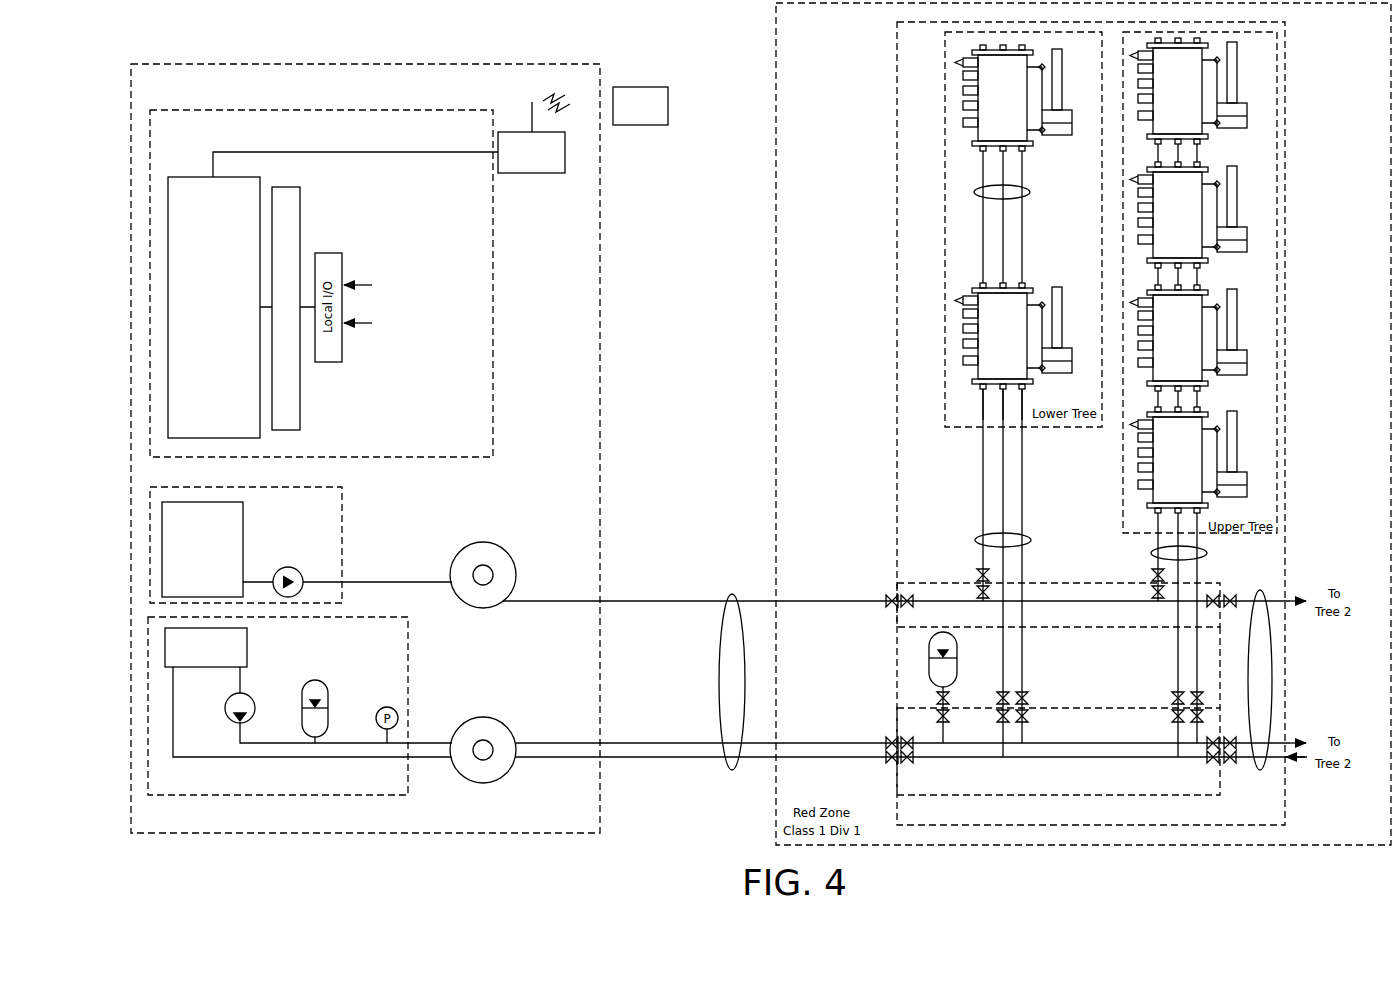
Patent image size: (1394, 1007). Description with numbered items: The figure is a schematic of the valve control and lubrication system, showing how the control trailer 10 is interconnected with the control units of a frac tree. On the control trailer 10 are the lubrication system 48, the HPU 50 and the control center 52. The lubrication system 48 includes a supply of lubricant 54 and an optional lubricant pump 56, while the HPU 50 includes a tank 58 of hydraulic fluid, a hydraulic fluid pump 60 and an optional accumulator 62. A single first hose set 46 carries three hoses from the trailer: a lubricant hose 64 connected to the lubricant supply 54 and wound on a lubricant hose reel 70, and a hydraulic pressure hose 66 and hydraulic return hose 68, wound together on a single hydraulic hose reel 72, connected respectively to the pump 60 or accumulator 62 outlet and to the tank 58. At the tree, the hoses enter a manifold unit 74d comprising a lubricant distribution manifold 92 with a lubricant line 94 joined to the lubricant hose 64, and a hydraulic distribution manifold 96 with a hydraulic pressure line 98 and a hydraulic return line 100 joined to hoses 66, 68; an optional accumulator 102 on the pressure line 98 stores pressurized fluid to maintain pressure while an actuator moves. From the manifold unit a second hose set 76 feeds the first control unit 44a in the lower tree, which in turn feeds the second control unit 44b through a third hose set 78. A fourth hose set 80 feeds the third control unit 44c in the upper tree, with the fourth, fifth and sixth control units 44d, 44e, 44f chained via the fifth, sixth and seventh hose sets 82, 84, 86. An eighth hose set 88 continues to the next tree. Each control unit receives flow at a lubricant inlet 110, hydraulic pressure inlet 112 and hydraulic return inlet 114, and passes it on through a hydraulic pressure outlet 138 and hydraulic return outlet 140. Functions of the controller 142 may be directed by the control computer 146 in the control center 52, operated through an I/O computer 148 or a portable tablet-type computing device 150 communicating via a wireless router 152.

The control trailer 10 is at (604, 288).
The first control unit 44a is at (1000, 337).
The second control unit 44b is at (995, 98).
The third control unit 44c is at (1188, 462).
The fourth control unit 44d is at (1188, 333).
The fifth control unit 44e is at (1192, 218).
The sixth control unit 44f is at (1190, 98).
The first hose set 46 is at (730, 590).
The lubrication system 48 is at (347, 522).
The HPU 50 is at (411, 675).
The control center 52 is at (496, 337).
The supply of lubricant 54 is at (243, 536).
The lubricant pump 56 is at (300, 571).
The tank 58 is at (247, 647).
The hydraulic fluid pump 60 is at (226, 714).
The accumulator 62 is at (318, 680).
The lubricant hose 64 is at (612, 600).
The hydraulic pressure hose 66 is at (612, 742).
The hydraulic return hose 68 is at (612, 758).
The lubricant hose reel 70 is at (495, 607).
The hydraulic hose reel 72 is at (510, 777).
The manifold unit 74d is at (893, 674).
The second hose set 76 is at (972, 539).
The third hose set 78 is at (972, 192).
The fourth hose set 80 is at (1149, 552).
The fifth hose set 82 is at (1208, 396).
The sixth hose set 84 is at (1208, 277).
The seventh hose set 86 is at (1208, 153).
The eighth hose set 88 is at (1268, 587).
The lubricant distribution manifold 92 is at (1124, 633).
The lubricant line 94 is at (1062, 598).
The hydraulic distribution manifold 96 is at (1124, 703).
The hydraulic pressure line 98 is at (1135, 745).
The hydraulic return line 100 is at (1040, 760).
The accumulator 102 is at (929, 652).
The lubricant inlet 110 is at (983, 390).
The hydraulic pressure inlet 112 is at (1022, 390).
The hydraulic return inlet 114 is at (1003, 390).
The hydraulic pressure outlet 138 is at (983, 282).
The hydraulic return outlet 140 is at (1022, 282).
The controller 142 is at (1003, 282).
The control computer 146 is at (229, 426).
The I/O computer 148 is at (300, 227).
The portable tablet-type computing device 150 is at (640, 125).
The wireless router 152 is at (532, 173).